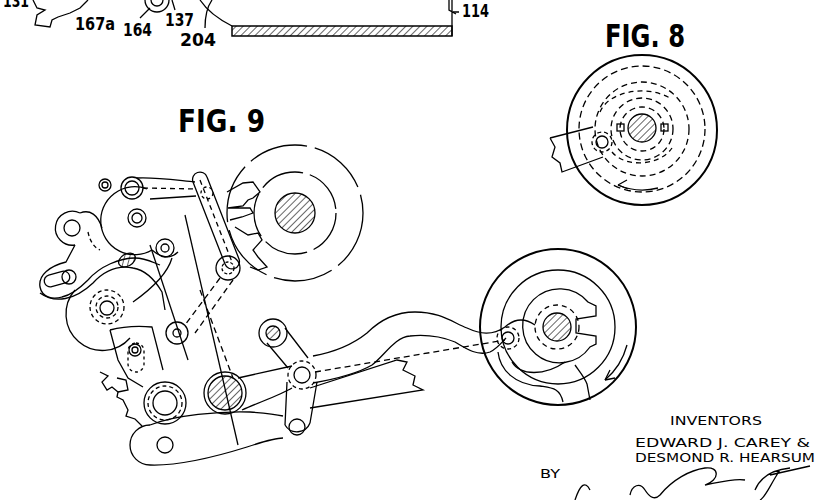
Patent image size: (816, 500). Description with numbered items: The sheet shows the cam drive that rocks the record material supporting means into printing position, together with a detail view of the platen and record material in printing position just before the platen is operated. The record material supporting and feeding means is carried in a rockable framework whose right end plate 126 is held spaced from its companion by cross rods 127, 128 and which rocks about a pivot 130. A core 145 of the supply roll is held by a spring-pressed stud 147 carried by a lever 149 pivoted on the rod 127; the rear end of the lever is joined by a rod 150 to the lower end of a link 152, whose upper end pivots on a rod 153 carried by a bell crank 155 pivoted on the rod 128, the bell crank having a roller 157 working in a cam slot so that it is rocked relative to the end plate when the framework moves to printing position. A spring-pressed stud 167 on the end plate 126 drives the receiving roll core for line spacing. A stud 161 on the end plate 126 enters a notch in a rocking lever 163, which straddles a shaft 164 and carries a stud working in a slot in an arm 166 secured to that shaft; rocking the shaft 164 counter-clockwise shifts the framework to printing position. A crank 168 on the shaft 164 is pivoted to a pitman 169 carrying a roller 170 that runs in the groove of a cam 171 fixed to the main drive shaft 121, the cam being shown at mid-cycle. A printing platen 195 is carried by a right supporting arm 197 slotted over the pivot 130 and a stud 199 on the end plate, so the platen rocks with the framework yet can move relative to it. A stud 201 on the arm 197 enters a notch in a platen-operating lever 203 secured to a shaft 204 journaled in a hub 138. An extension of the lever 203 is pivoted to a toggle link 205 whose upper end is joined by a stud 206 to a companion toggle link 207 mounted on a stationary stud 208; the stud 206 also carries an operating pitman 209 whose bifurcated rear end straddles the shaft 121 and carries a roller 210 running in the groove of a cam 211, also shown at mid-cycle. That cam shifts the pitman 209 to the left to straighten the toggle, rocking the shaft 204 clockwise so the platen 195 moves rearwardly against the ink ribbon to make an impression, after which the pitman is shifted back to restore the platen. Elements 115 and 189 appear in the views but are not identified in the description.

In FIG. 9, the crank pin shaft 115 is at (312, 200).
In FIG. 8, the main drive shaft 121 is at (652, 122).
In FIG. 9, the main drive shaft 121 is at (568, 324).
In FIG. 9, the right end plate 126 is at (88, 212).
In FIG. 9, the cross rod 127 is at (63, 229).
In FIG. 9, the cross rod 128 is at (204, 182).
In FIG. 9, the pivot 130 is at (170, 258).
In FIG. 9, the hub 138 is at (238, 381).
In FIG. 9, the core of the supply roll 145 is at (95, 306).
In FIG. 9, the spring-pressed stud 147 is at (92, 312).
In FIG. 9, the lever 149 is at (185, 338).
In FIG. 9, the rod 150 is at (227, 380).
In FIG. 9, the link 152 is at (214, 290).
In FIG. 9, the rod 153 is at (234, 278).
In FIG. 9, the bell crank 155 is at (172, 180).
In FIG. 9, the roller 157 is at (132, 177).
In FIG. 9, the stud 161 is at (110, 340).
In FIG. 9, the rocking lever 163 is at (110, 363).
In FIG. 9, the shaft 164 is at (205, 417).
In FIG. 9, the arm 166 is at (138, 398).
In FIG. 9, the spring-pressed stud 167 is at (128, 212).
In FIG. 9, the crank 168 is at (156, 444).
In FIG. 8, the pitman 169 is at (562, 165).
In FIG. 9, the pitman 169 is at (407, 389).
In FIG. 8, the roller 170 is at (607, 130).
In FIG. 8, the cam 171 is at (710, 146).
In FIG. 9, the pin 189 is at (104, 179).
In FIG. 9, the printing platen 195 is at (241, 209).
In FIG. 9, the right supporting arm 197 is at (47, 280).
In FIG. 9, the stud 199 is at (65, 272).
In FIG. 9, the stud 201 is at (240, 258).
In FIG. 9, the platen-operating lever 203 is at (213, 332).
In FIG. 9, the shaft 204 is at (234, 440).
In FIG. 9, the toggle link 205 is at (306, 427).
In FIG. 9, the stud 206 is at (304, 366).
In FIG. 9, the companion toggle link 207 is at (289, 340).
In FIG. 9, the stationary stud 208 is at (278, 323).
In FIG. 9, the operating pitman 209 is at (410, 318).
In FIG. 9, the roller 210 is at (504, 348).
In FIG. 9, the cam 211 is at (623, 294).